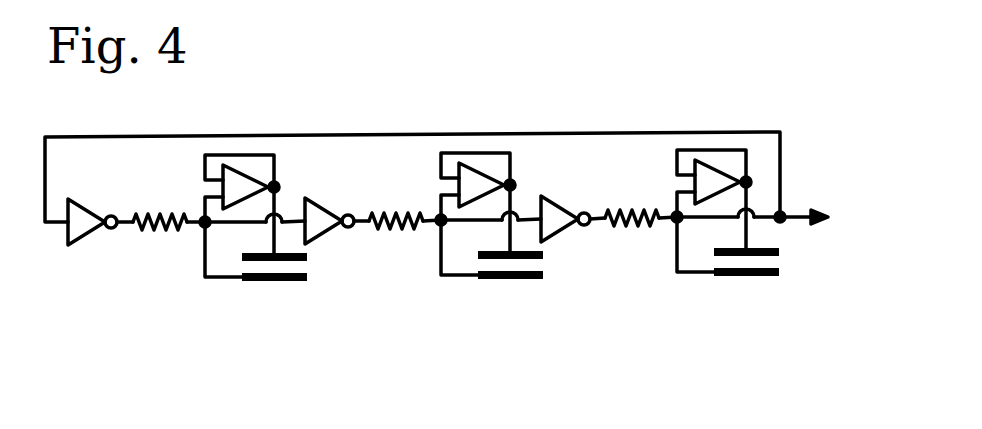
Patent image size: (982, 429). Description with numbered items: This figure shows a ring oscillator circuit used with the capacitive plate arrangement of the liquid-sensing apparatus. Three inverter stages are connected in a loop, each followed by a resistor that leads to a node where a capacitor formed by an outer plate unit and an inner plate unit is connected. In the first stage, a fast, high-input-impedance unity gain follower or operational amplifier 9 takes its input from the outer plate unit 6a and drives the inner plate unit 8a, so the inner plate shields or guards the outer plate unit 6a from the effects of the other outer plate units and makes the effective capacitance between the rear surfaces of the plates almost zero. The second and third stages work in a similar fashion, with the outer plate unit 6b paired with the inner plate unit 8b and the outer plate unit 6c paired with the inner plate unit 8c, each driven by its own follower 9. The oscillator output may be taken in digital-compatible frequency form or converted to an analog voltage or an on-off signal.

The unity gain follower 9 is at (247, 178).
The outer plate unit 6a is at (271, 281).
The inner plate unit 8a is at (309, 261).
The outer plate unit 6b is at (506, 279).
The inner plate unit 8b is at (545, 259).
The outer plate unit 6c is at (742, 276).
The inner plate unit 8c is at (781, 256).